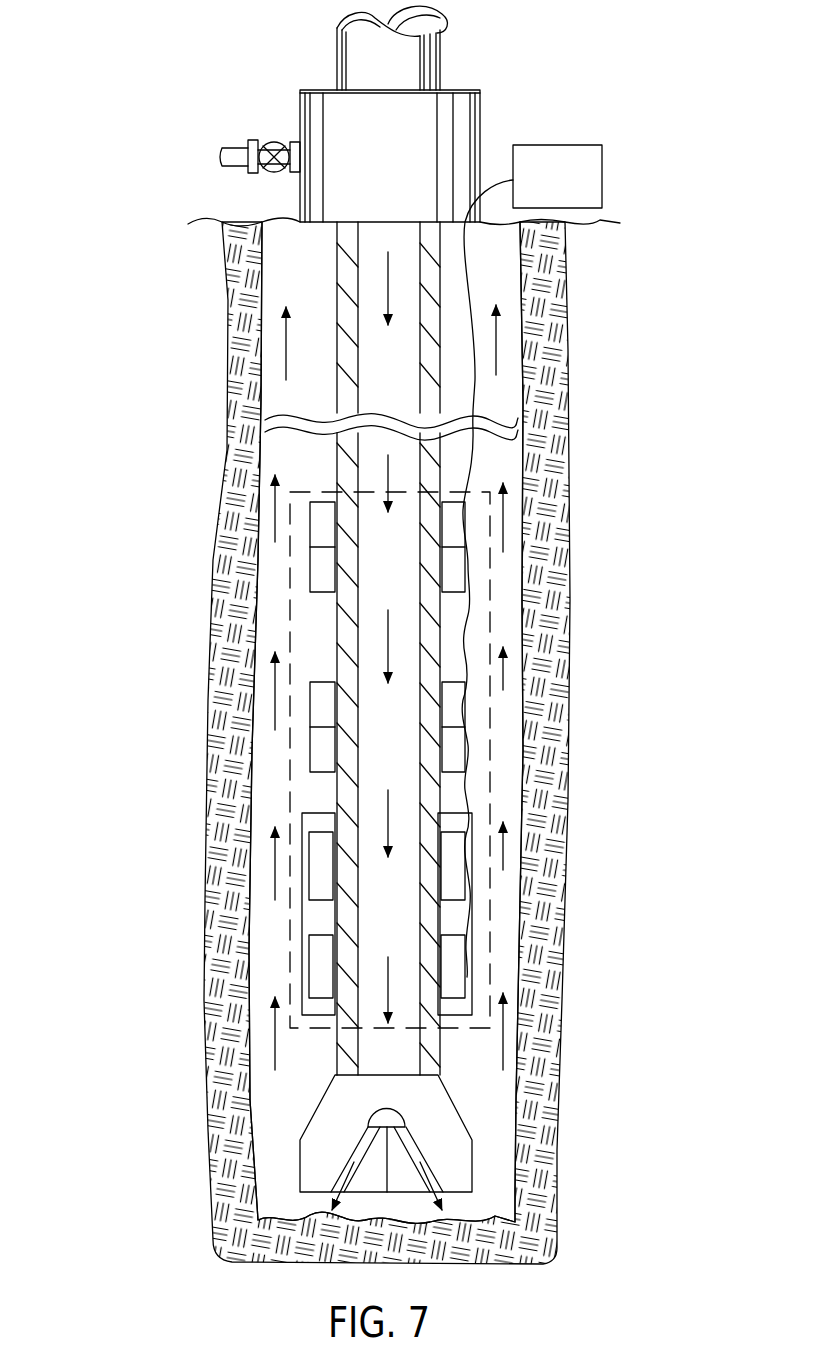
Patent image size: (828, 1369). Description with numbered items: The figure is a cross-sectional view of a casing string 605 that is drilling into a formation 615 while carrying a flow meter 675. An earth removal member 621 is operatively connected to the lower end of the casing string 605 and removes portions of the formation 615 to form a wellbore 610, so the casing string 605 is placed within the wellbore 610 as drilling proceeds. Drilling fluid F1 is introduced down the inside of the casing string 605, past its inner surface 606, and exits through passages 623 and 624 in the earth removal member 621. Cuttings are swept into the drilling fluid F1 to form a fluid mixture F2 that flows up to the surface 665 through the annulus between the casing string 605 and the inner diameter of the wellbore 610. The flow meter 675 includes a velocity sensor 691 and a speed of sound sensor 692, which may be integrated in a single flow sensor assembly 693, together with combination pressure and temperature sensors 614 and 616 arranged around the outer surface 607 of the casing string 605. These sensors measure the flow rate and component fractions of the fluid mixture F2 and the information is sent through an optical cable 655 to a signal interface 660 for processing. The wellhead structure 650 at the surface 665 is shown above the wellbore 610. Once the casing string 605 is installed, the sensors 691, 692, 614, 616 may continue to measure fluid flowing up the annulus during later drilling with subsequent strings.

The casing string 605 is at (320, 648).
The inner surface 606 is at (335, 463).
The outer surface 607 is at (335, 360).
The wellbore 610 is at (527, 937).
The combination pressure and temperature sensor 614 is at (288, 728).
The formation 615 is at (560, 450).
The combination pressure and temperature sensor 616 is at (290, 549).
The earth removal member 621 is at (377, 1142).
The passage 623 is at (357, 1150).
The passage 624 is at (416, 1148).
The wellhead 650 is at (300, 108).
The optical cable 655 is at (472, 390).
The signal interface 660 is at (575, 195).
The surface 665 is at (217, 220).
The flow meter 675 is at (376, 760).
The velocity sensor 691 is at (306, 950).
The speed of sound sensor 692 is at (306, 862).
The flow sensor assembly 693 is at (296, 914).
The drilling fluid F1 is at (392, 276).
The fluid mixture F2 is at (282, 333).